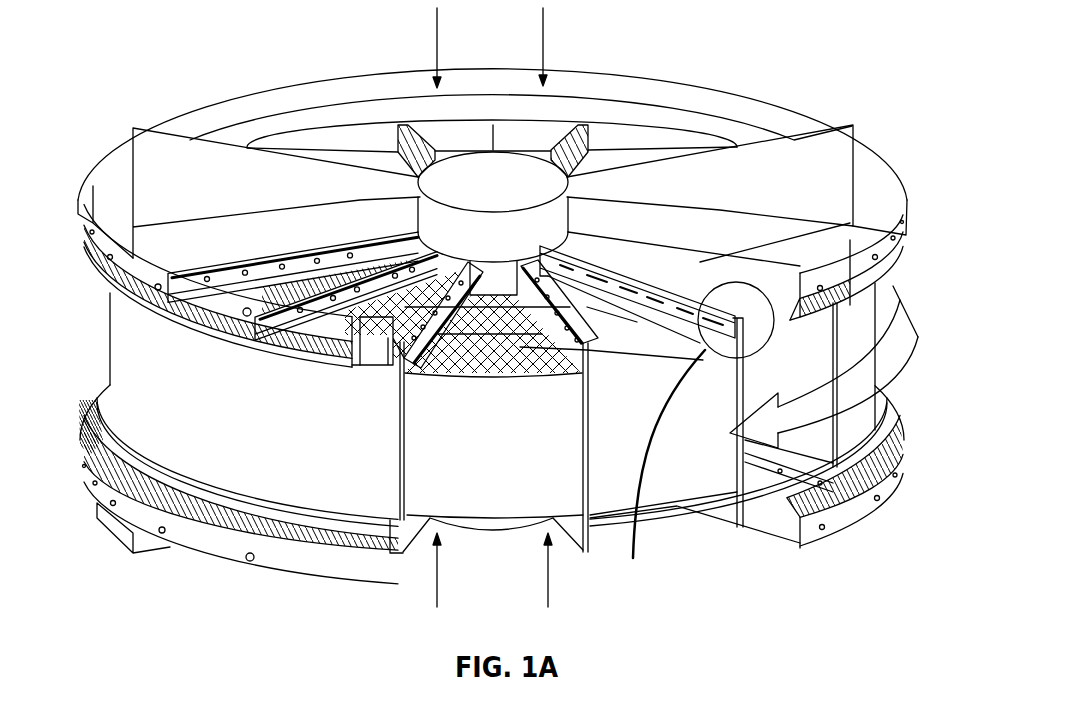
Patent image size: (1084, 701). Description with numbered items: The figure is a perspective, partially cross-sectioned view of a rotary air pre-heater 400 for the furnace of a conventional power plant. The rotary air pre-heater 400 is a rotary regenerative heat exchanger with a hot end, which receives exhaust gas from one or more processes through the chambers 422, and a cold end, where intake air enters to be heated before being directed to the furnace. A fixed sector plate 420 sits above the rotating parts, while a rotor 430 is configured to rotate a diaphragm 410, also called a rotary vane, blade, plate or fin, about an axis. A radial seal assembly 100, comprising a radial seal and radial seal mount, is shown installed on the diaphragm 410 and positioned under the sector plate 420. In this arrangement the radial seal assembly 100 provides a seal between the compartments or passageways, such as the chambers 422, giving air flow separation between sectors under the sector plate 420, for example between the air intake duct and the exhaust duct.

The rotary air pre-heater 400 is at (148, 92).
The fixed sector plate 420 is at (143, 177).
The chambers 422 is at (352, 110).
The rotor 430 is at (495, 282).
The radial seal assembly 100 is at (742, 300).
The diaphragm 410 is at (740, 403).